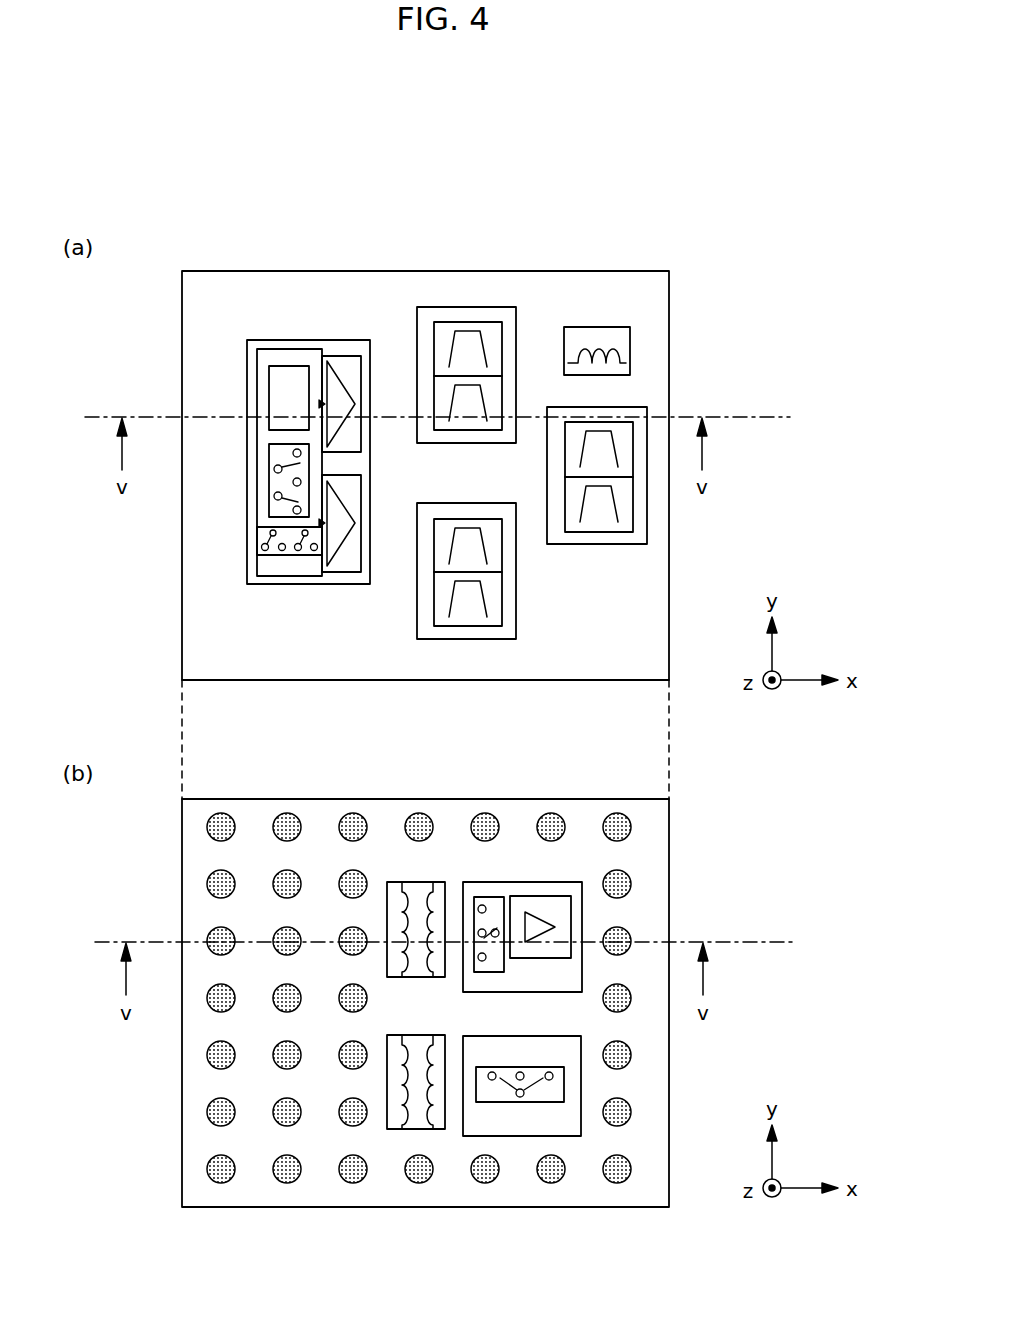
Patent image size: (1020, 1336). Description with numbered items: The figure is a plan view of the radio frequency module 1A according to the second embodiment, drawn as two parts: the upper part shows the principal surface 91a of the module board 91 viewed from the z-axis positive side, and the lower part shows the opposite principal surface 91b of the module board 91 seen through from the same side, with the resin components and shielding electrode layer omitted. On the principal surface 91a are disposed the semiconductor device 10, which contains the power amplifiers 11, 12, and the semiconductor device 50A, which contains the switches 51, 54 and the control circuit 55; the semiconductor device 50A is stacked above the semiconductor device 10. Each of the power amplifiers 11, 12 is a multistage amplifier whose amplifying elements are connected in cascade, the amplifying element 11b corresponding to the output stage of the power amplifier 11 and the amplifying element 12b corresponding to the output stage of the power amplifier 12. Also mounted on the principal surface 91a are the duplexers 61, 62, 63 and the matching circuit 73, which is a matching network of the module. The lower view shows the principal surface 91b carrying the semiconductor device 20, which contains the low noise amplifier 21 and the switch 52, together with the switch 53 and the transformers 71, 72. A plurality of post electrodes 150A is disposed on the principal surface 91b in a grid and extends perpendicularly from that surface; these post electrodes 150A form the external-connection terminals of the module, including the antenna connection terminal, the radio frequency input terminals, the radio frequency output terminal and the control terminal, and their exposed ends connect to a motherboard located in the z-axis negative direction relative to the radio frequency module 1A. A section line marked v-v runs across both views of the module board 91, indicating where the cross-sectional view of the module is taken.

The radio frequency module 1A is at (755, 287).
The semiconductor device 10 is at (302, 341).
The power amplifier 11 is at (336, 356).
The amplifying element 11b is at (350, 379).
The power amplifier 12 is at (344, 575).
The amplifying element 12b is at (350, 500).
The semiconductor device 20 is at (512, 882).
The low noise amplifier 21 is at (557, 896).
The semiconductor device 50A is at (280, 349).
The switch 51 is at (270, 480).
The switch 52 is at (488, 896).
The switch 53 is at (524, 1037).
The switch 54 is at (285, 557).
The control circuit 55 is at (270, 385).
The duplexer 61 is at (517, 363).
The duplexer 62 is at (517, 612).
The duplexer 63 is at (597, 545).
The transformer 71 is at (424, 882).
The transformer 72 is at (418, 1036).
The matching circuit 73 is at (585, 327).
The module board 91 is at (563, 269).
The principal surface 91a is at (656, 302).
The principal surface 91b is at (660, 824).
The post electrodes 150A is at (223, 1182).